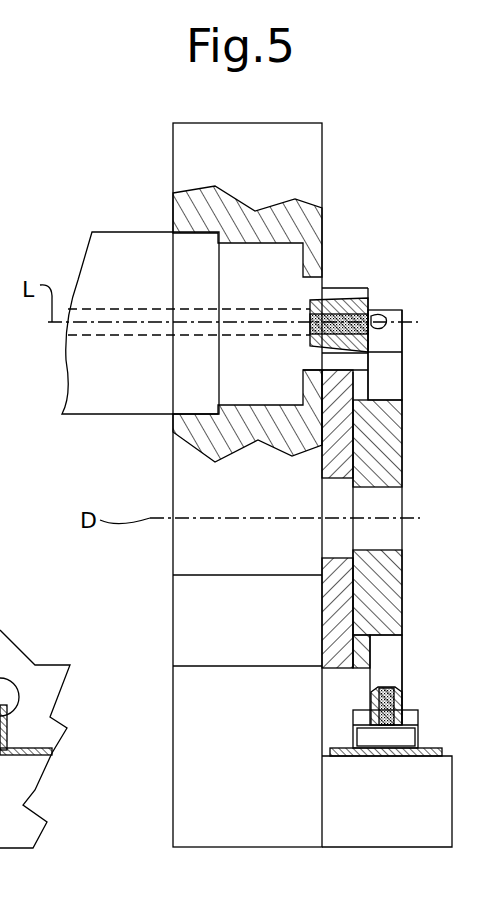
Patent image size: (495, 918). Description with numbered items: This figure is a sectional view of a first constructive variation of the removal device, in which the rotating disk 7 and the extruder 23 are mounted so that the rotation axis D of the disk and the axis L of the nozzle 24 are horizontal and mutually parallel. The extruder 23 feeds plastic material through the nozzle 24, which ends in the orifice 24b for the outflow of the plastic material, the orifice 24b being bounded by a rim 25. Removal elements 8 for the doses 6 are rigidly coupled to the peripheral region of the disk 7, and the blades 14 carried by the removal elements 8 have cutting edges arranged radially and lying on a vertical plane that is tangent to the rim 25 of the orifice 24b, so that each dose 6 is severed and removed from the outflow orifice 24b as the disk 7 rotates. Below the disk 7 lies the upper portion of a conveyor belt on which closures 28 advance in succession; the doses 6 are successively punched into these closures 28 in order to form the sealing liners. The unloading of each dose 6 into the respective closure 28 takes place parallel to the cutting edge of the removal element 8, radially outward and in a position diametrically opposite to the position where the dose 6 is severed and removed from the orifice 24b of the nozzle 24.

The extruder 23 is at (104, 224).
The nozzle 24 is at (347, 288).
The rim 25 is at (373, 300).
The orifice 24b is at (403, 312).
The removal element 8 is at (414, 343).
The rotating disk 7 is at (395, 445).
The dose 6 is at (403, 698).
The blade 14 is at (372, 697).
The closure 28 is at (418, 728).